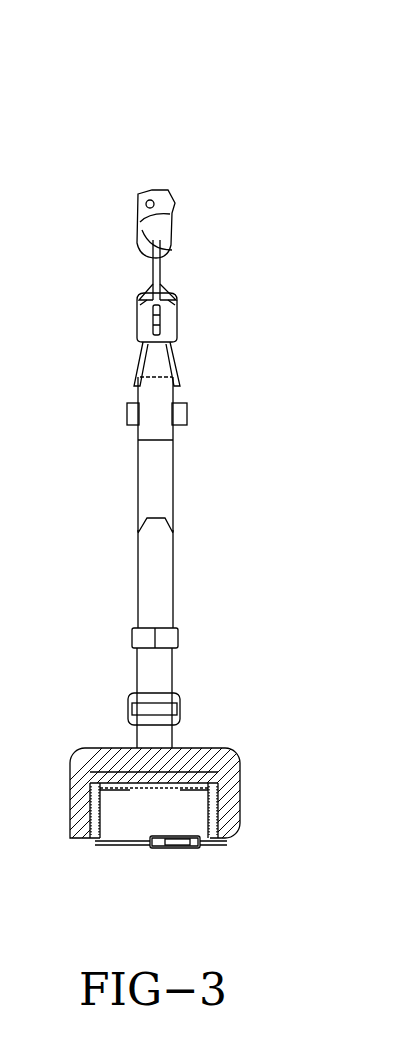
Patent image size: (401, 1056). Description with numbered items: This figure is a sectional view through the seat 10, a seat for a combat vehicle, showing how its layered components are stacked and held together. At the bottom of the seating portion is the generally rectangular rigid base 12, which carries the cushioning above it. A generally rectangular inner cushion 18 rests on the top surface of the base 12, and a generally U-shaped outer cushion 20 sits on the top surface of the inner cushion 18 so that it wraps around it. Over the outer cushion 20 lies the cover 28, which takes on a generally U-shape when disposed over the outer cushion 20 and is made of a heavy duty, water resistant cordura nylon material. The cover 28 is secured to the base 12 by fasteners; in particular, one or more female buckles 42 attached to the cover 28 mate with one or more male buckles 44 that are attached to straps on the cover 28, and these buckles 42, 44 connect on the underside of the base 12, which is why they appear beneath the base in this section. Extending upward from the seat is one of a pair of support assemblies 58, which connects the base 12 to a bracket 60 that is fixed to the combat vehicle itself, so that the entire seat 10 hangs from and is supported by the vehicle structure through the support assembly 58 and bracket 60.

The seat 10 is at (279, 128).
The bracket 60 is at (151, 192).
The support assembly 58 is at (250, 241).
The cover 28 is at (80, 750).
The inner cushion 18 is at (208, 770).
The outer cushion 20 is at (82, 777).
The rigid base 12 is at (127, 793).
The female buckle 42 is at (185, 849).
The male buckle 44 is at (175, 842).